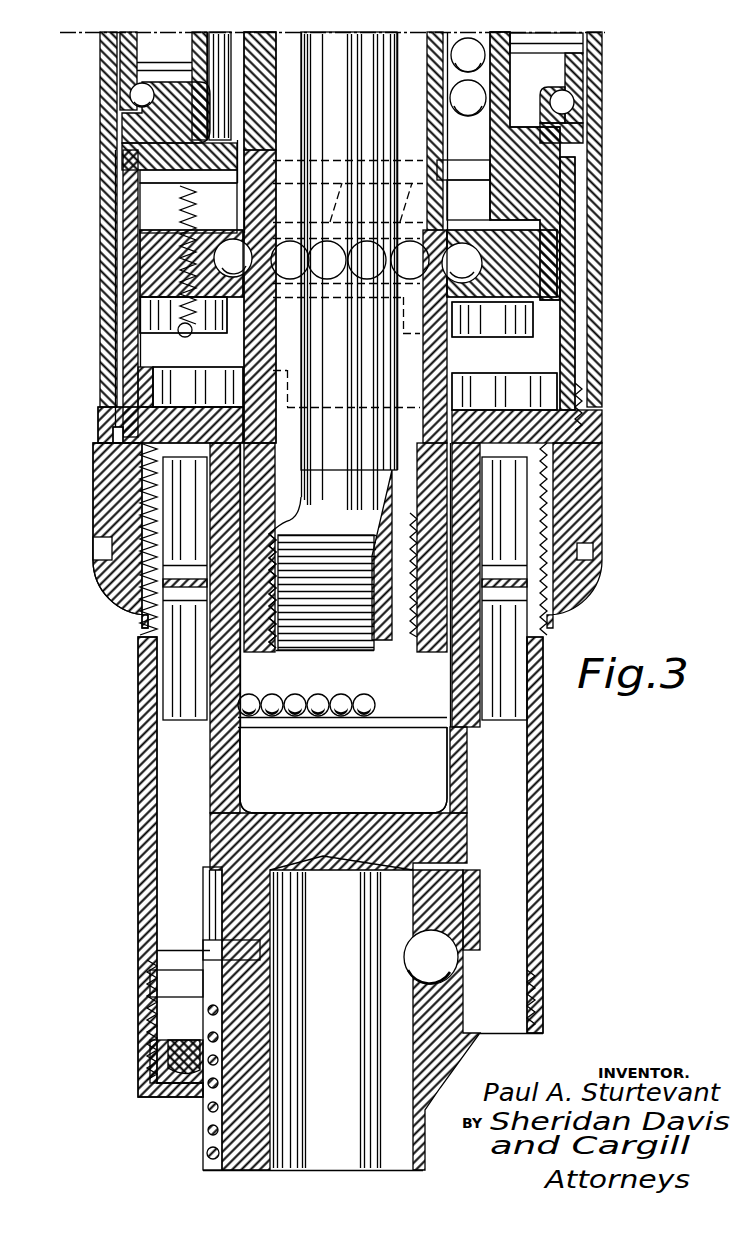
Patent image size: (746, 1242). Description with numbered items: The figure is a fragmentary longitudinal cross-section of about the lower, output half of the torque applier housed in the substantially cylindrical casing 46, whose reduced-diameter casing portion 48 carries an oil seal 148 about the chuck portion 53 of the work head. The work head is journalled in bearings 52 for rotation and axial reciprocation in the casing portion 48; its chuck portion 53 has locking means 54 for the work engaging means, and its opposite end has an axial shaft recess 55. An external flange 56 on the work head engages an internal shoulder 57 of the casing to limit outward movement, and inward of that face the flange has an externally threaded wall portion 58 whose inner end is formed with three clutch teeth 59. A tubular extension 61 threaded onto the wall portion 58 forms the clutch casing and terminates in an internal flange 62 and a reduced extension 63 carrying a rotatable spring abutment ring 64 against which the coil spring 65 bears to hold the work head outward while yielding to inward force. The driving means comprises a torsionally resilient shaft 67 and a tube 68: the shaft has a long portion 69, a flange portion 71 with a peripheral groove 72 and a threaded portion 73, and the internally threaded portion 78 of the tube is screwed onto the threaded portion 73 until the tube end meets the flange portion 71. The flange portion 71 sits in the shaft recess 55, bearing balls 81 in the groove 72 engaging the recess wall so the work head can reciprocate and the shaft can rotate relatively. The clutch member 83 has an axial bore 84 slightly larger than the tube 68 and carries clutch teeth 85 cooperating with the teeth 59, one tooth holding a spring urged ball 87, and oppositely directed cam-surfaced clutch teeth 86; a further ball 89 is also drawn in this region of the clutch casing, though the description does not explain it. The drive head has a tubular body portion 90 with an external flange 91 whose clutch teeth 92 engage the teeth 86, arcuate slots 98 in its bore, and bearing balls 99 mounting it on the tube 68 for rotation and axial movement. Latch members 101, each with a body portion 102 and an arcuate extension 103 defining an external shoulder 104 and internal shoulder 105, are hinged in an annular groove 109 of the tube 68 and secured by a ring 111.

The casing 46 is at (583, 107).
The casing portion 48 is at (140, 825).
The bearings 52 is at (177, 670).
The chuck portion 53 is at (193, 1028).
The locking means 54 is at (203, 987).
The shaft recess 55 is at (237, 777).
The external flange 56 is at (120, 460).
The internal shoulder 57 is at (113, 430).
The threaded wall portion 58 is at (107, 405).
The clutch teeth 59 is at (167, 377).
The tubular extension 61 is at (140, 292).
The internal flange 62 is at (155, 147).
The extension 63 is at (150, 110).
The spring abutment ring 64 is at (128, 104).
The coil spring 65 is at (120, 44).
The shaft 67 is at (371, 25).
The tube 68 is at (246, 24).
The shaft portion 69 is at (403, 63).
The flange portion 71 is at (372, 728).
The peripheral groove 72 is at (307, 718).
The threaded portion 73 is at (338, 632).
The internally threaded portion 78 is at (272, 622).
The bearing balls 81 is at (258, 718).
The clutch member 83 is at (215, 238).
The axial bore 84 is at (463, 290).
The clutch teeth 85 is at (150, 313).
The clutch teeth 86 is at (153, 200).
The spring urged ball 87 is at (187, 334).
The locking ball 89 is at (230, 258).
The tubular body portion 90 is at (510, 44).
The external flange 91 is at (568, 158).
The clutch teeth 92 is at (540, 200).
The arcuate slots 98 is at (207, 77).
The bearing balls 99 is at (476, 46).
The latch members 101 is at (234, 23).
The body portion 102 is at (240, 167).
The arcuate extension 103 is at (253, 187).
The external shoulder 104 is at (210, 172).
The internal shoulder 105 is at (237, 143).
The annular groove 109 is at (470, 170).
The ring 111 is at (490, 207).
The oil seal 148 is at (200, 1085).